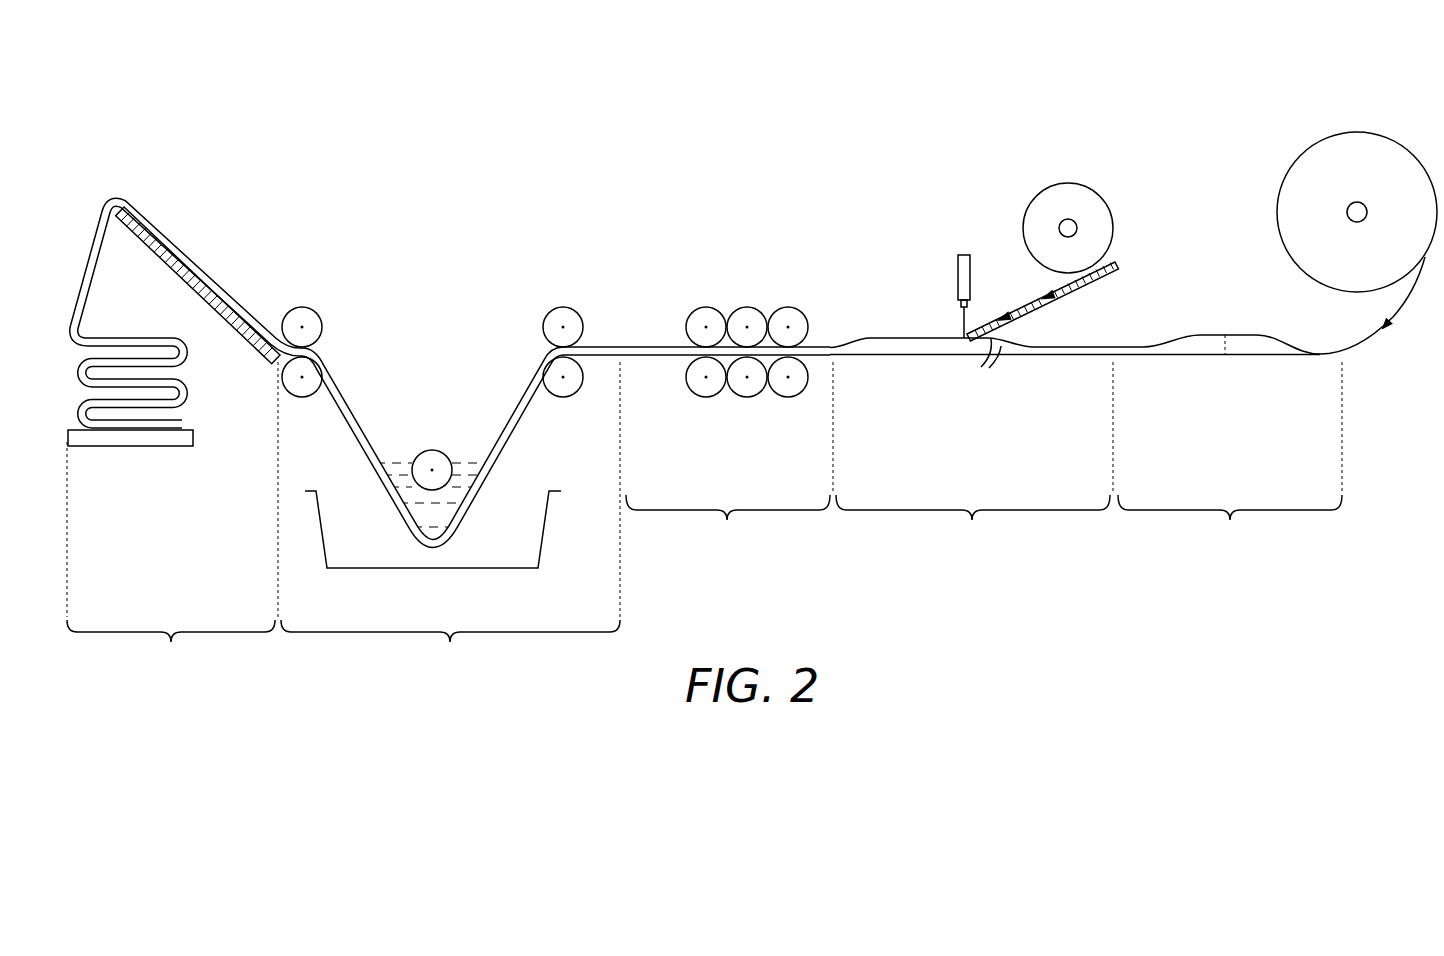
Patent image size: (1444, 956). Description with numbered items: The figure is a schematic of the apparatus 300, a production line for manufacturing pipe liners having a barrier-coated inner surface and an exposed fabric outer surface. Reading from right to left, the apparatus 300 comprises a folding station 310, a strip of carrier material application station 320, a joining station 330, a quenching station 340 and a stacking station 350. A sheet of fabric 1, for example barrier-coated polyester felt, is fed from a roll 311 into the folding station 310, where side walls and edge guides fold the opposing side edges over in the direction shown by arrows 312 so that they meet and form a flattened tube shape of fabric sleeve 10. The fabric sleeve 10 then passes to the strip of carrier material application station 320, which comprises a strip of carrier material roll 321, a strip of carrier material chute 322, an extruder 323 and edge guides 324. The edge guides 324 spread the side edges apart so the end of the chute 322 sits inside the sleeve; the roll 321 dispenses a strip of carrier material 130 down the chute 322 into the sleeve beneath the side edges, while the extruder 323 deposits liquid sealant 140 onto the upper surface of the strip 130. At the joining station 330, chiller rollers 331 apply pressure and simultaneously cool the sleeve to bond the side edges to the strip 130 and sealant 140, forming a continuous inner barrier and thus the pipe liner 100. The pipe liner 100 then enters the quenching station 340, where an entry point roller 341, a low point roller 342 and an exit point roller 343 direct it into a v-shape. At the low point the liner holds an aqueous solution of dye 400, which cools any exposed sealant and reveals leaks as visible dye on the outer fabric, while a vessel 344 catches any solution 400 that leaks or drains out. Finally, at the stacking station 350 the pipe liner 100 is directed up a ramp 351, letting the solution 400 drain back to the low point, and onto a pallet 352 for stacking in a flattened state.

The sheet of fabric 1 is at (1370, 342).
The fabric sleeve 10 is at (1143, 345).
The pipe liner 100 is at (200, 384).
The strip of carrier material 130 is at (1023, 297).
The liquid sealant 140 is at (962, 318).
The apparatus 300 is at (861, 108).
The folding station 310 is at (1230, 524).
The roll 311 is at (1352, 122).
The arrows 312 is at (1250, 317).
The strip of carrier material application station 320 is at (973, 524).
The strip of carrier material roll 321 is at (1066, 182).
The strip of carrier material chute 322 is at (1083, 282).
The extruder 323 is at (964, 252).
The edge guides 324 is at (990, 363).
The joining station 330 is at (728, 524).
The chiller rollers 331 is at (791, 430).
The quenching station 340 is at (450, 648).
The entry point roller 341 is at (562, 306).
The low point roller 342 is at (432, 449).
The exit point roller 343 is at (302, 306).
The vessel 344 is at (540, 556).
The stacking station 350 is at (171, 648).
The ramp 351 is at (157, 263).
The pallet 352 is at (163, 448).
The aqueous solution of dye 400 is at (455, 513).